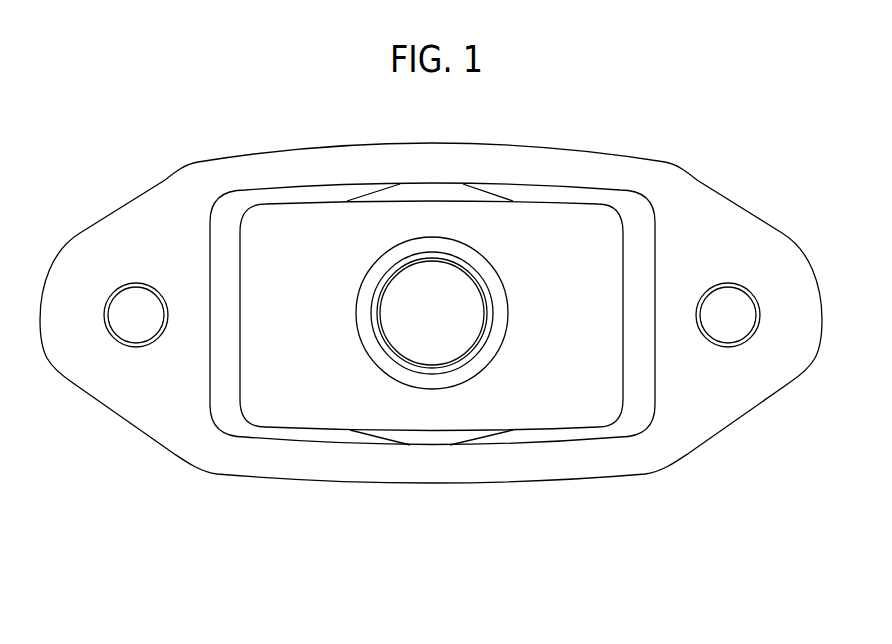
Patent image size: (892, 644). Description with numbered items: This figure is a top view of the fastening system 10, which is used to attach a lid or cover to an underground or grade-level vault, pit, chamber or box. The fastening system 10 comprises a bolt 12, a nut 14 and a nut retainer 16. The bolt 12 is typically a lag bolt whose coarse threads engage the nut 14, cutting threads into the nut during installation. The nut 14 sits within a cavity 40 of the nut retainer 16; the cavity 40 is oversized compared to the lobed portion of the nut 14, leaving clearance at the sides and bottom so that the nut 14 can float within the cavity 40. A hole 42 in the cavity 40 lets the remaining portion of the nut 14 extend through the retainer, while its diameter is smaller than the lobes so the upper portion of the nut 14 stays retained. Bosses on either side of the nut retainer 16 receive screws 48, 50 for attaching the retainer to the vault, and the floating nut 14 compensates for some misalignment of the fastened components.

The fastening system 10 is at (607, 524).
The bolt 12 is at (408, 293).
The nut 14 is at (565, 227).
The nut retainer 16 is at (325, 482).
The cavity 40 is at (640, 245).
The hole 42 is at (487, 190).
The screw 48 is at (140, 328).
The mounting hole 50 is at (725, 328).